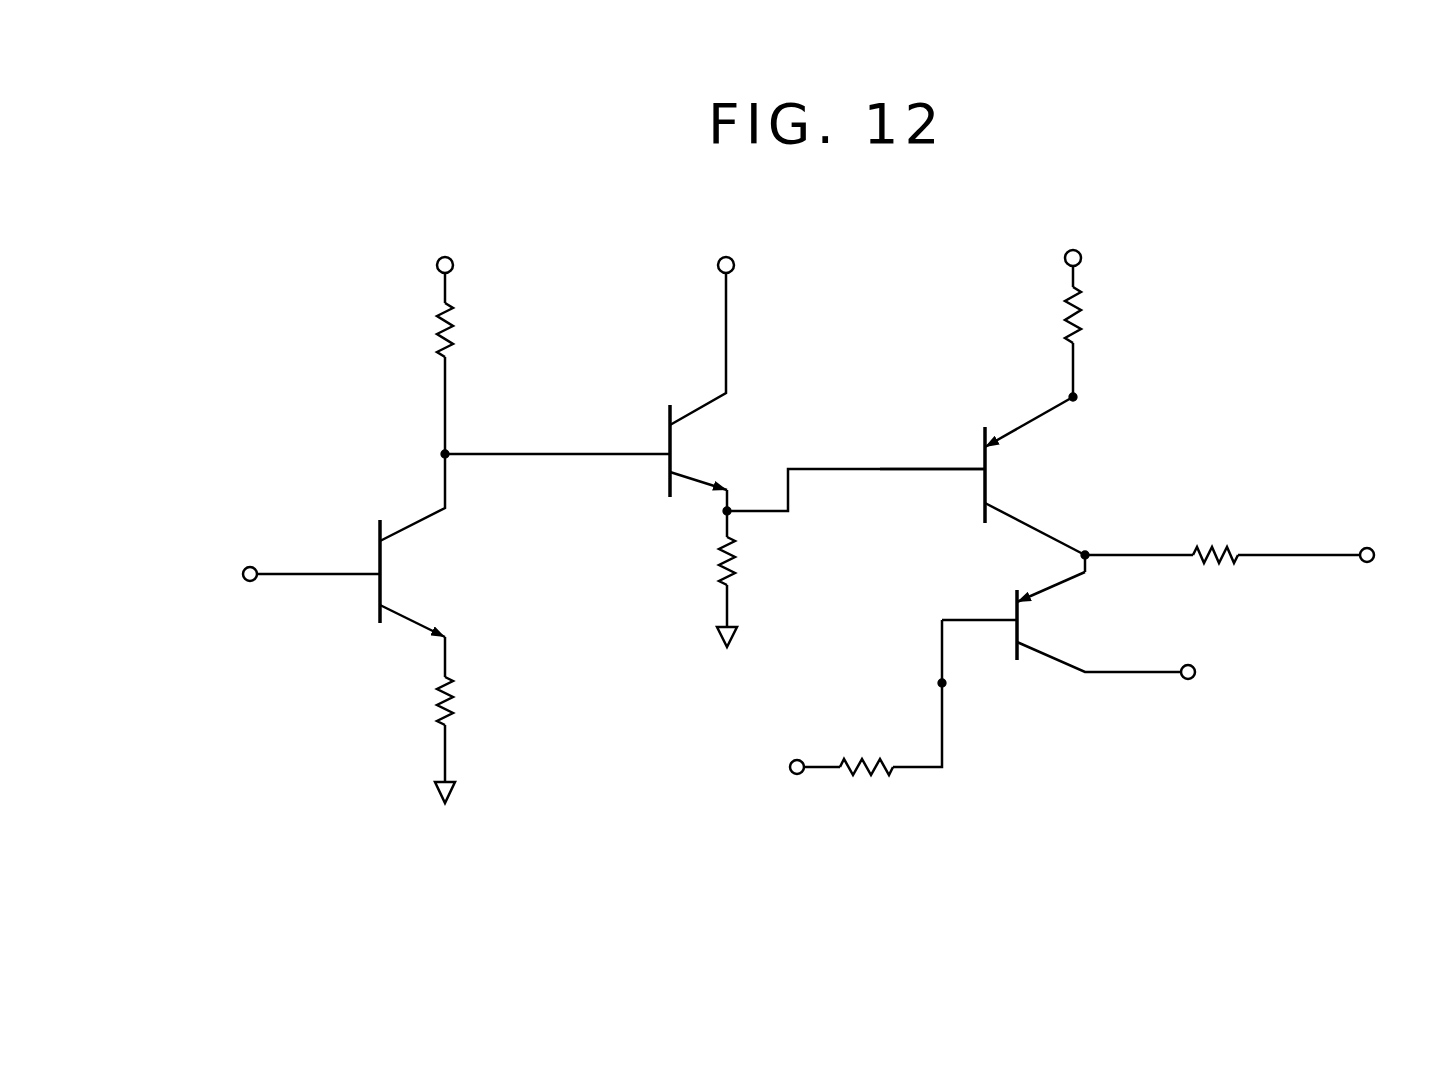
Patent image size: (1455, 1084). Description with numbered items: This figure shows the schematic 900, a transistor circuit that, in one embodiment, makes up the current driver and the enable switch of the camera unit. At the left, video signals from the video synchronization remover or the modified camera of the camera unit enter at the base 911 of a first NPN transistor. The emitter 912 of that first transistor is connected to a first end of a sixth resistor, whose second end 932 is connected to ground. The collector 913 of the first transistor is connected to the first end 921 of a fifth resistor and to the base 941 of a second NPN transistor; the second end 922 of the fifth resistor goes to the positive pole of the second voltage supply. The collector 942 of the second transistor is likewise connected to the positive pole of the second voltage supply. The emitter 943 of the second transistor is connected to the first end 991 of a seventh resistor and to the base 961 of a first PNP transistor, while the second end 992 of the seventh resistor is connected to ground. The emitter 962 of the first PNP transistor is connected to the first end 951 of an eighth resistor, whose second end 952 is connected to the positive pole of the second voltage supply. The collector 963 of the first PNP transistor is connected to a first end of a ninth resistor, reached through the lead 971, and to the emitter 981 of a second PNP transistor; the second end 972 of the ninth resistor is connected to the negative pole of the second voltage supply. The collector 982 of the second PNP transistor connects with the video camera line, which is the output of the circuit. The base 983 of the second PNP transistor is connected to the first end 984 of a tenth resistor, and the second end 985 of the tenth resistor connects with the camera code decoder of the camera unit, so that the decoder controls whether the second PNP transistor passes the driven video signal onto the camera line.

The schematic 900 is at (233, 798).
The base of NPN transistor T3 911 is at (318, 573).
The emitter of transistor T3 912 is at (405, 622).
The collector of transistor T3 913 is at (432, 508).
The first end of resistor R5 921 is at (445, 400).
The second end of resistor R5 922 is at (445, 286).
The second end of resistor R6 932 is at (445, 755).
The base of NPN transistor T4 941 is at (618, 453).
The collector of transistor T4 942 is at (706, 403).
The emitter of transistor T4 943 is at (695, 480).
The first end of resistor R8 951 is at (1073, 362).
The second end of resistor R8 952 is at (1073, 278).
The base of PNP transistor T5 961 is at (932, 469).
The emitter of transistor T5 962 is at (1045, 415).
The collector of transistor T5 963 is at (1020, 522).
The lead from collector node to resistor R9 971 is at (1145, 555).
The second end of resistor R9 972 is at (1282, 555).
The emitter of PNP transistor T6 981 is at (1045, 590).
The collector of transistor T6 982 is at (1053, 665).
The base of transistor T6 983 is at (942, 650).
The first end of resistor R10 984 is at (942, 745).
The second end of resistor R10 985 is at (816, 767).
The first end of resistor R7 991 is at (735, 513).
The second end of resistor R7 992 is at (730, 600).